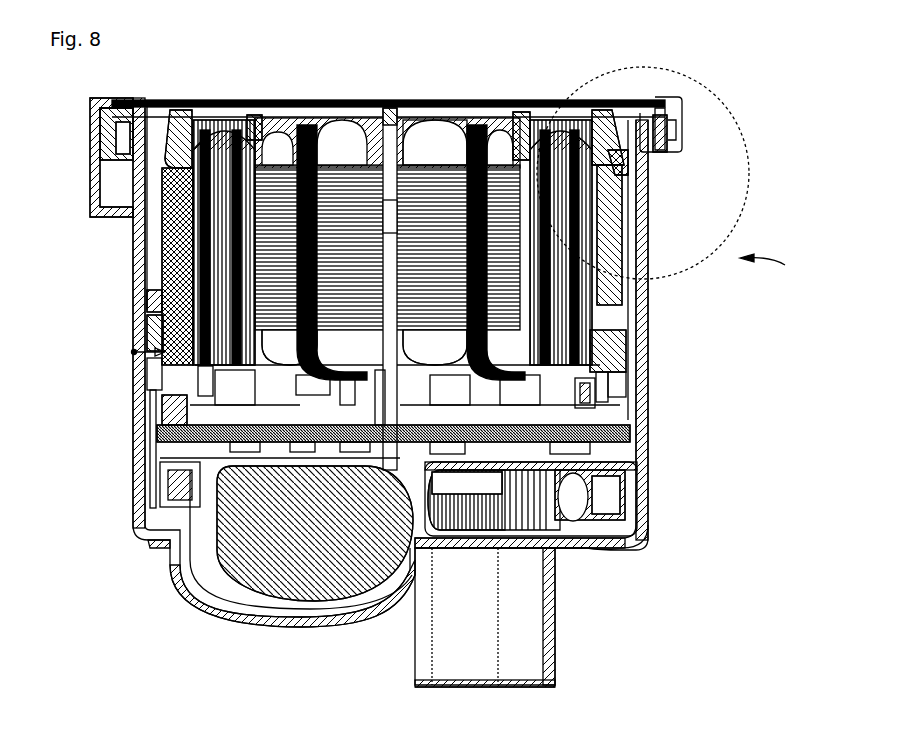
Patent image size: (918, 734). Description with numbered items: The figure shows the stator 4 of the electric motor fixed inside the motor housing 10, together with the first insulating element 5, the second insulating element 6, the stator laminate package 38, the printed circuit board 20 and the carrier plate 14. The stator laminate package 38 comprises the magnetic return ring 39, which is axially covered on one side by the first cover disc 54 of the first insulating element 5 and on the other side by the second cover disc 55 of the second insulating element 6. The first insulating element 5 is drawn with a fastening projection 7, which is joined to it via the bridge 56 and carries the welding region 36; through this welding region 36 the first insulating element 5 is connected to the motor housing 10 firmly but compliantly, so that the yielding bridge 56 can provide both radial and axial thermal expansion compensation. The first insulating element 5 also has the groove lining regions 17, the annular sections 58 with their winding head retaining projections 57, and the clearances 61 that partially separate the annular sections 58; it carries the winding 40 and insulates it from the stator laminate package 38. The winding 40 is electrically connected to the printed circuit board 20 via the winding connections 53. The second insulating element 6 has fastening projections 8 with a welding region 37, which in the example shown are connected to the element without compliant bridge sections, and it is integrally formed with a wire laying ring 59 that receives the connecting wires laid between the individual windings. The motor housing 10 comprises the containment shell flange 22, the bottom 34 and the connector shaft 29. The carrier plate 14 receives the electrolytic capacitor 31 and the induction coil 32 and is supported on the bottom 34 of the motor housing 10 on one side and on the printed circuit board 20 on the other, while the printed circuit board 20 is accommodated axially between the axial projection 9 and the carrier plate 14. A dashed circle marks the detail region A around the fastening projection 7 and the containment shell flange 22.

The stator 4 is at (771, 265).
The first insulating element 5 is at (190, 101).
The second insulating element 6 is at (134, 352).
The fastening projection 7 is at (630, 168).
The fastening projection 8 is at (147, 374).
The axial projection 9 is at (150, 418).
The motor housing 10 is at (655, 490).
The carrier plate 14 is at (150, 472).
The groove lining regions 17 is at (388, 185).
The printed circuit board 20 is at (630, 440).
The containment shell flange 22 is at (695, 140).
The connector shaft 29 is at (473, 656).
The electrolytic capacitor 31 is at (272, 580).
The induction coil 32 is at (458, 535).
The bottom 34 is at (535, 530).
The welding region 36 is at (640, 195).
The welding region 37 is at (147, 333).
The stator laminate package 38 is at (343, 180).
The magnetic return ring 39 is at (622, 296).
The stator winding 40 is at (222, 130).
The winding connections 53 is at (600, 417).
The first cover disc 54 is at (146, 222).
The second cover disc 55 is at (160, 293).
The bridge section 56 is at (614, 150).
The winding head retaining projections 57 is at (448, 145).
The annular sections 58 is at (596, 140).
The wire laying ring 59 is at (605, 389).
The clearances 61 is at (256, 128).
The detail region A is at (730, 110).